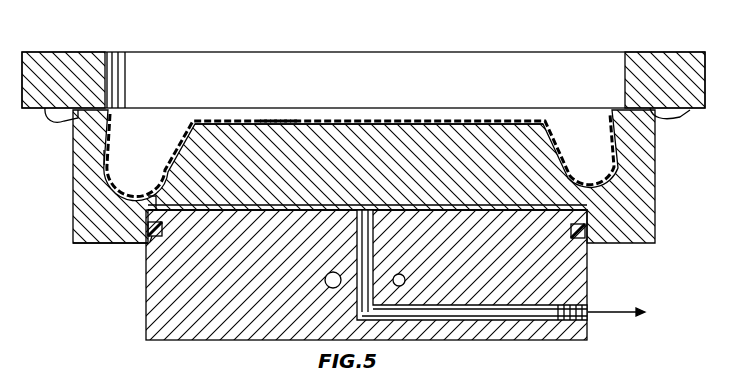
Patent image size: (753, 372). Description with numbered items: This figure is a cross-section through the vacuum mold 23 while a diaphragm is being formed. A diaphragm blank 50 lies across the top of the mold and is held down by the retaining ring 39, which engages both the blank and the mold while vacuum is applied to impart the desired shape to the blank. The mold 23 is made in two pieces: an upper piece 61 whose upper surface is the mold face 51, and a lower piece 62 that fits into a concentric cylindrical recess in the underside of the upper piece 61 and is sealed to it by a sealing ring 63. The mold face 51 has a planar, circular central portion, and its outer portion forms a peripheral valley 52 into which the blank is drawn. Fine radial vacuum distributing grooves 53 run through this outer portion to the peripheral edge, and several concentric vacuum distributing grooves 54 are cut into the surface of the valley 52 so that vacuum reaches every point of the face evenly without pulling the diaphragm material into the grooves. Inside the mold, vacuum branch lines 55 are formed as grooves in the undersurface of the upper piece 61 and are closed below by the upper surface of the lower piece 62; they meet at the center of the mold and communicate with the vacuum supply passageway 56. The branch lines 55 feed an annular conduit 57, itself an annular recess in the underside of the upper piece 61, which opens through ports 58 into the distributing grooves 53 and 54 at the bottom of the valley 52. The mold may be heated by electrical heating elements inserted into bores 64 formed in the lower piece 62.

The vacuum mold 23 is at (73, 178).
The retaining ring 39 is at (326, 62).
The diaphragm blank 50 is at (60, 124).
The upper face 51 is at (273, 122).
The peripheral valley 52 is at (132, 196).
The radial vacuum distributing grooves 53 is at (120, 182).
The concentric vacuum distributing grooves 54 is at (190, 144).
The vacuum branch lines 55 is at (310, 205).
The vacuum supply passageway 56 is at (372, 262).
The annular conduit 57 is at (152, 228).
The ports 58 is at (158, 200).
The upper piece 61 is at (428, 134).
The lower piece 62 is at (185, 330).
The sealing ring 63 is at (164, 230).
The bores 64 is at (325, 280).